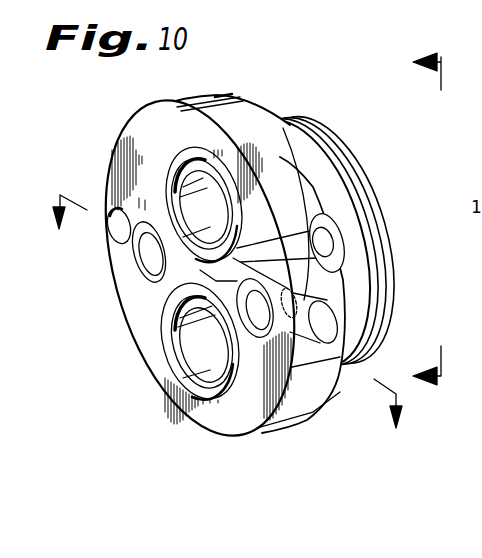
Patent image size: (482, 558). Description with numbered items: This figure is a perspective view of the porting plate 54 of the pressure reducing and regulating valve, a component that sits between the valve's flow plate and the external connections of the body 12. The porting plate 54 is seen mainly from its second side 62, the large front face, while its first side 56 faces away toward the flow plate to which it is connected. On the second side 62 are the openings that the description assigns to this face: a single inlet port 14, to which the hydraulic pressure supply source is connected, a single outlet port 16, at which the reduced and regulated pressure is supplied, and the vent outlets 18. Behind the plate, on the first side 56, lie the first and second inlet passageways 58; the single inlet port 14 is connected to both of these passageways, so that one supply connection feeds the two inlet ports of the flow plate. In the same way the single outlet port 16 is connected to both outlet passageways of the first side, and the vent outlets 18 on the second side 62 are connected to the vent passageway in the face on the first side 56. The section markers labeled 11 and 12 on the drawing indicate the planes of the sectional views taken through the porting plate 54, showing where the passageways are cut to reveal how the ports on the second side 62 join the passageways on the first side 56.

The section line 11- 11 is at (441, 218).
The body 12 is at (229, 302).
The inlet port 14 is at (172, 160).
The outlet port 16 is at (205, 360).
The vent outlets 18 is at (125, 214).
The porting plate 54 is at (225, 95).
The first side 56 is at (366, 172).
The first and second inlet passageways 58 is at (478, 281).
The second side 62 is at (127, 140).